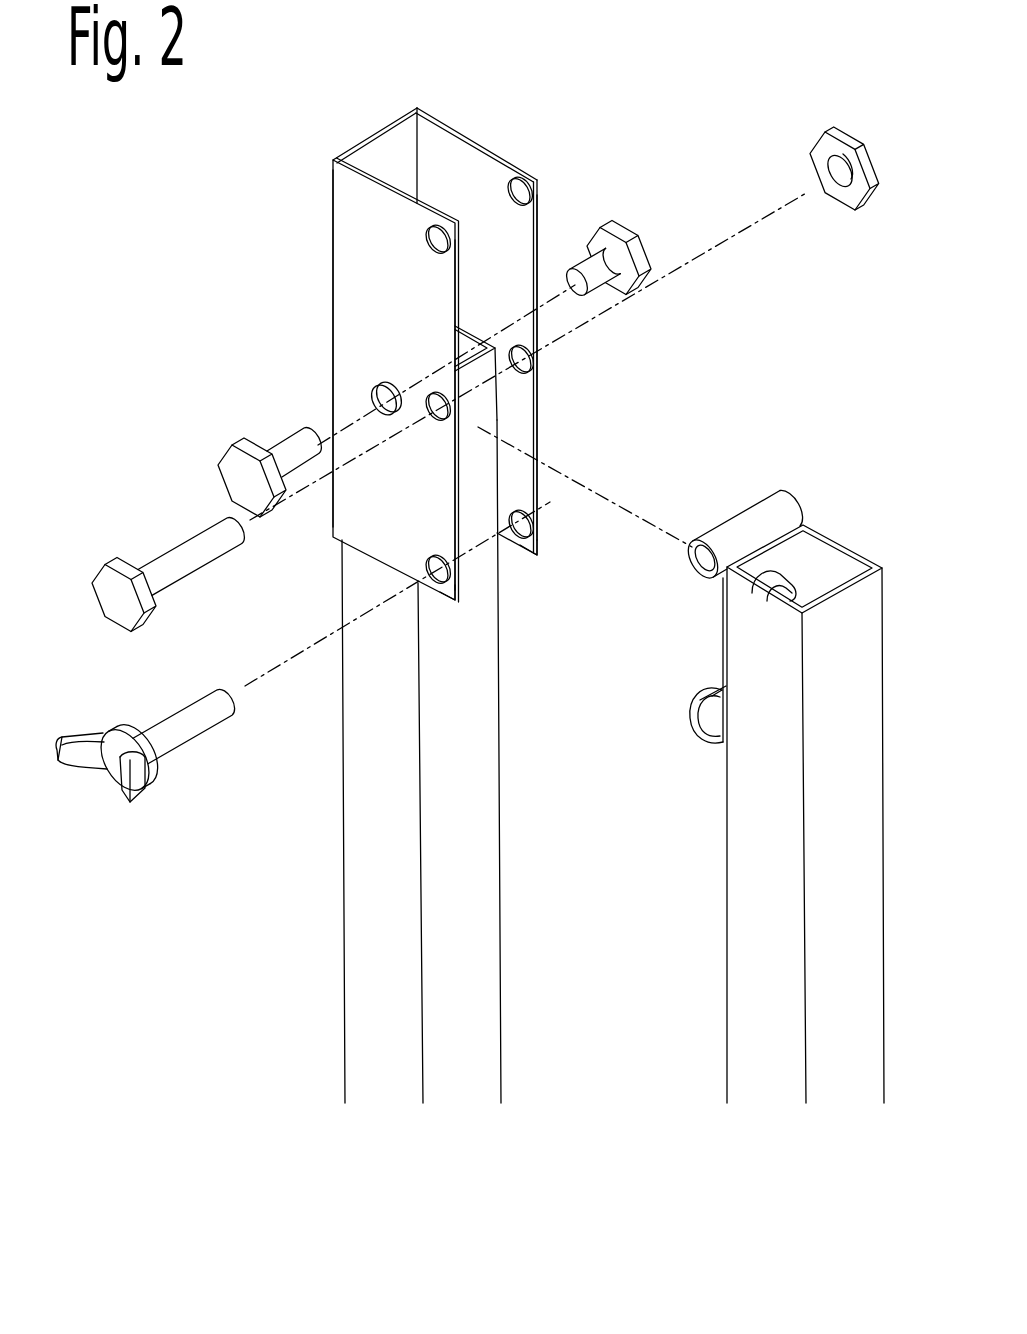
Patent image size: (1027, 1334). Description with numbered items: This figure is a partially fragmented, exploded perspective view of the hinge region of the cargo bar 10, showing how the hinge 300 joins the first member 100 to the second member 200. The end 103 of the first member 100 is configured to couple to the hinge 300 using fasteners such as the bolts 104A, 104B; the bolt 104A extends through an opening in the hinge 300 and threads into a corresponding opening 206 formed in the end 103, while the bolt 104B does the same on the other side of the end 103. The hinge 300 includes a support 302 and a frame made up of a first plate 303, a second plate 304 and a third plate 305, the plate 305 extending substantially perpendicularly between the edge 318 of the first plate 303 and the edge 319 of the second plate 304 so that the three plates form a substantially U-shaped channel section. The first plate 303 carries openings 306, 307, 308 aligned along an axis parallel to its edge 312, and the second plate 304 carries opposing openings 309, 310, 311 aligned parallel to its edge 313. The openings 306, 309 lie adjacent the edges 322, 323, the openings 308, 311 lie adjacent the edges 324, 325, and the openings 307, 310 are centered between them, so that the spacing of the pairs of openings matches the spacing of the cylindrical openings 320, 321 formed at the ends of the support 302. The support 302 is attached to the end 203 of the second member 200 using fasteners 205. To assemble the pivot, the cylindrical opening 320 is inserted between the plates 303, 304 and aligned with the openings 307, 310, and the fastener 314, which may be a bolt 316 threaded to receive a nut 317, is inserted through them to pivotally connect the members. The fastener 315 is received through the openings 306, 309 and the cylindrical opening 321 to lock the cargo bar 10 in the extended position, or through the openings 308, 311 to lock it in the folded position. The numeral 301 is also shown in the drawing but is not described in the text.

The cargo bar 10 is at (596, 96).
The first member 100 is at (345, 848).
The end of first member 103 is at (480, 411).
The bolt 104A is at (290, 437).
The bolt 104B is at (625, 237).
The second member 200 is at (738, 848).
The end of second member 203 is at (745, 645).
The fasteners 205 is at (778, 580).
The opening 206 is at (382, 383).
The hinge 300 is at (300, 203).
The first aperture 301 is at (375, 397).
The support 302 is at (800, 496).
The first plate 303 is at (360, 282).
The second plate 304 is at (472, 175).
The third plate 305 is at (380, 150).
The opening 306 is at (433, 240).
The opening 307 is at (432, 393).
The opening 308 is at (432, 558).
The opening 309 is at (530, 195).
The opening 310 is at (531, 360).
The opening 311 is at (531, 525).
The edge of first plate 312 is at (458, 283).
The edge of second plate 313 is at (540, 228).
The fastener 314 is at (162, 538).
The fastener 315 is at (192, 756).
The bolt 316 is at (178, 565).
The nut 317 is at (835, 134).
The edge of first plate 318 is at (333, 250).
The edge of second plate 319 is at (420, 143).
The cylindrical opening 320 is at (725, 530).
The cylindrical opening 321 is at (707, 725).
The edge of first plate 322 is at (387, 180).
The edge of second plate 323 is at (517, 167).
The edge of first plate 324 is at (455, 600).
The edge of second plate 325 is at (530, 556).